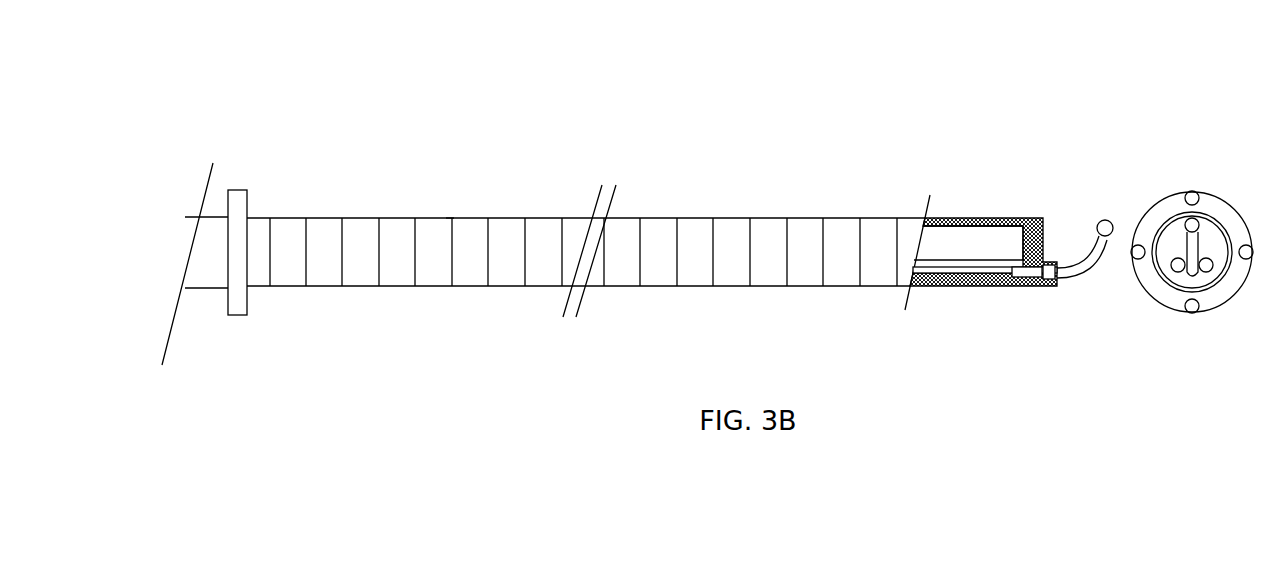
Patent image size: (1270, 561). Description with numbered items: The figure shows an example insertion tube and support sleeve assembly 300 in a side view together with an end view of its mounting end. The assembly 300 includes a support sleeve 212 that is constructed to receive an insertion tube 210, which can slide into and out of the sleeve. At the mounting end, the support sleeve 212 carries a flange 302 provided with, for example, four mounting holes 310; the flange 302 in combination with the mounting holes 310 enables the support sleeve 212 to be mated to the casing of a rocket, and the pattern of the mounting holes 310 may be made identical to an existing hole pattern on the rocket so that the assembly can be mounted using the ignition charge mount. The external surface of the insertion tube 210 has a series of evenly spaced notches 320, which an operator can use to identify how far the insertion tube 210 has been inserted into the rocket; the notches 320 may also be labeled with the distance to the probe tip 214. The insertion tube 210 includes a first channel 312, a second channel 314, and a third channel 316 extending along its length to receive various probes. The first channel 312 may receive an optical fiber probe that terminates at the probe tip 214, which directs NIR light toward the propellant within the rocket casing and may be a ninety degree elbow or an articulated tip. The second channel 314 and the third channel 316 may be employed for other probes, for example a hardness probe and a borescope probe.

The insertion tube and support sleeve assembly 300 is at (1206, 56).
The insertion tube 210 is at (699, 213).
The support sleeve 212 is at (208, 298).
The probe tip 214 is at (1102, 278).
The flange 302 is at (1235, 150).
The mounting holes 310 is at (1187, 186).
The first channel 312 is at (941, 282).
The second channel 314 is at (1172, 273).
The third channel 316 is at (1212, 275).
The notches 320 is at (450, 205).